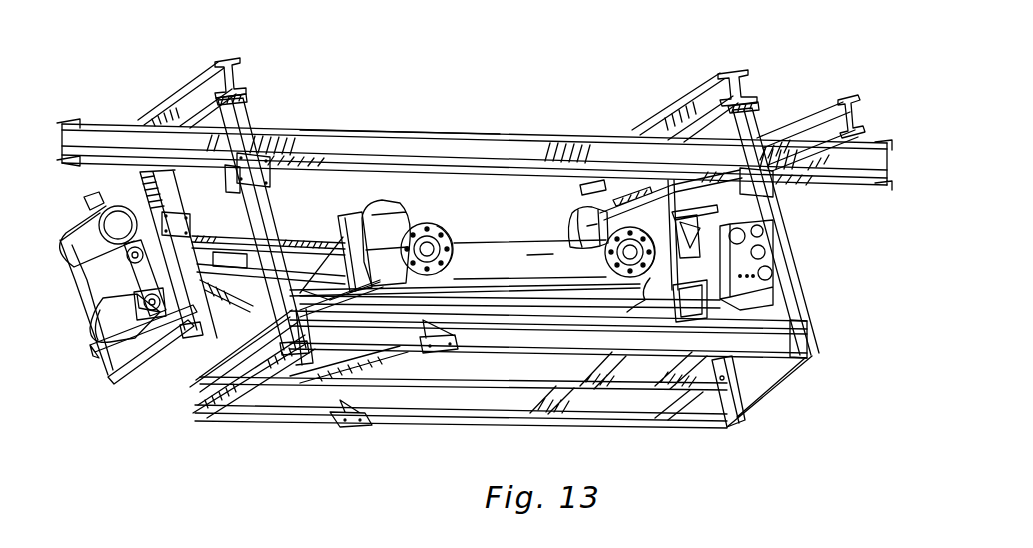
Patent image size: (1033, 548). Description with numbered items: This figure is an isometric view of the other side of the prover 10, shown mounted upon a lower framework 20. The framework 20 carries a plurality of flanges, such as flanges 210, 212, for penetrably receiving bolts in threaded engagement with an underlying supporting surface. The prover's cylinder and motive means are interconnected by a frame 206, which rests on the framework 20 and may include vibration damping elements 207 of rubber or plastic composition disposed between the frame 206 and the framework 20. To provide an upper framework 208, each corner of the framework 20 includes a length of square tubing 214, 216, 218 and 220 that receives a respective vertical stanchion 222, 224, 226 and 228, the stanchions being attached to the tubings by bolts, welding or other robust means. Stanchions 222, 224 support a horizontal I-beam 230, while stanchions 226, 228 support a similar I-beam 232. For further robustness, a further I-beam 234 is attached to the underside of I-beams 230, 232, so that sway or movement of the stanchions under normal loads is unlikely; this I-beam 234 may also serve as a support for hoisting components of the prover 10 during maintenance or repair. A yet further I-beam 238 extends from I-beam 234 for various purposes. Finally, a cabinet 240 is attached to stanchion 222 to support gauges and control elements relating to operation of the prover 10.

The prover 10 is at (508, 235).
The framework 20 is at (498, 433).
The frame 206 is at (305, 266).
The vibration damping elements 207 is at (215, 348).
The upper framework 208 is at (539, 125).
The flange 210 is at (488, 355).
The flange 212 is at (360, 427).
The square tubing 214 is at (803, 347).
The square tubing 216 is at (727, 425).
The square tubing 218 is at (216, 413).
The square tubing 220 is at (310, 365).
The vertical stanchion 222 is at (783, 247).
The vertical stanchion 224 is at (780, 388).
The vertical stanchion 226 is at (166, 197).
The vertical stanchion 228 is at (273, 203).
The horizontal I-beam 230 is at (745, 88).
The I-beam 232 is at (243, 72).
The I-beam 234 is at (381, 128).
The I-beam 238 is at (849, 99).
The cabinet 240 is at (743, 310).